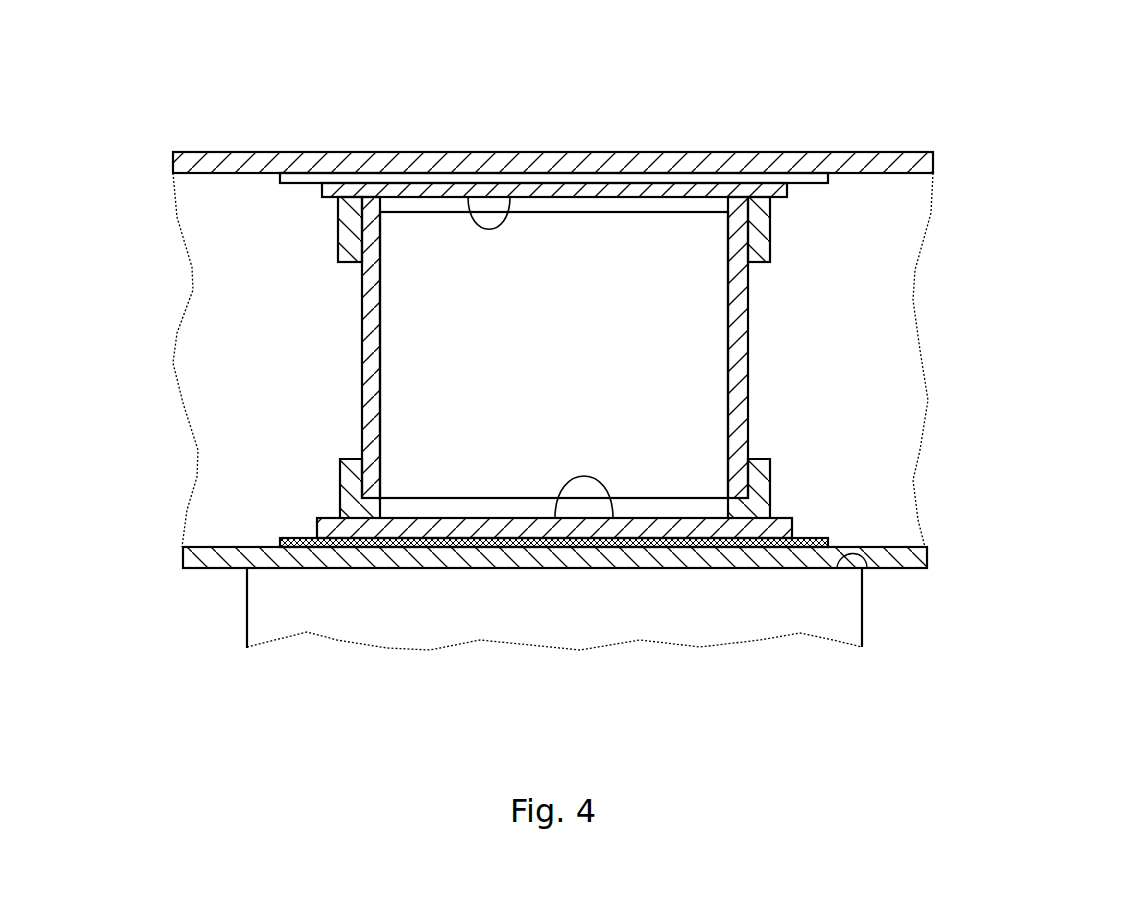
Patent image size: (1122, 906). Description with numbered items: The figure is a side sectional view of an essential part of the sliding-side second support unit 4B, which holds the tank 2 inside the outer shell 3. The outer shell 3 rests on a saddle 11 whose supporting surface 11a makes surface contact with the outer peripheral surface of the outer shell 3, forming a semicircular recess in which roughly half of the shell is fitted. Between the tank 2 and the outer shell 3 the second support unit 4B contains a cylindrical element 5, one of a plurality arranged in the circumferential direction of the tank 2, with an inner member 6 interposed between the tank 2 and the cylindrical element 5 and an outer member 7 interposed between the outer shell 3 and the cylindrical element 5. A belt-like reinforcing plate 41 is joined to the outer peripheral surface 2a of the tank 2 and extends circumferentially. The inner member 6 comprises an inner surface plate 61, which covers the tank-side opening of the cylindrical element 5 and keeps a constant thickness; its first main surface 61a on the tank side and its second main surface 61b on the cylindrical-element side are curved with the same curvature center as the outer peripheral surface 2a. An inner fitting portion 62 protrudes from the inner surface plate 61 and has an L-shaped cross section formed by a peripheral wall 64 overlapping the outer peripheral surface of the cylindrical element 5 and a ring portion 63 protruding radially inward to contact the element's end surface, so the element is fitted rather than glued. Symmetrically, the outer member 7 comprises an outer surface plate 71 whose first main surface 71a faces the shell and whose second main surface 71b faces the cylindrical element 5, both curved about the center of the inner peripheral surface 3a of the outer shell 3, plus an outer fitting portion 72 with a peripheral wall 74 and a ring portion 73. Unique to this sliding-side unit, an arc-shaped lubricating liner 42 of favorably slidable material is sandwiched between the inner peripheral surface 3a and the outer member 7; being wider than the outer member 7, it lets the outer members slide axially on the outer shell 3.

The tank 2 is at (888, 158).
The outer peripheral surface of the tank 2a is at (883, 174).
The outer shell 3 is at (897, 568).
The inner peripheral surface of the outer shell 3a is at (897, 547).
The second support unit 4B is at (142, 173).
The cylindrical element 5 is at (572, 267).
The inner member 6 is at (798, 28).
The inner surface plate 61 is at (554, 120).
The first main surface of the inner surface plate 61a is at (430, 192).
The second main surface of the inner surface plate 61b is at (503, 220).
The inner fitting portion 62 is at (772, 231).
The ring portion 63 is at (365, 200).
The peripheral wall 64 is at (338, 228).
The reinforcing plate 41 is at (302, 180).
The lubricating liner 42 is at (295, 540).
The outer member 7 is at (677, 702).
The outer surface plate 71 is at (554, 593).
The first main surface of the outer surface plate 71a is at (513, 542).
The second main surface of the outer surface plate 71b is at (613, 518).
The outer fitting portion 72 is at (769, 475).
The ring portion 73 is at (370, 520).
The peripheral wall 74 is at (346, 473).
The saddle 11 is at (828, 613).
The supporting surface 11a is at (880, 568).